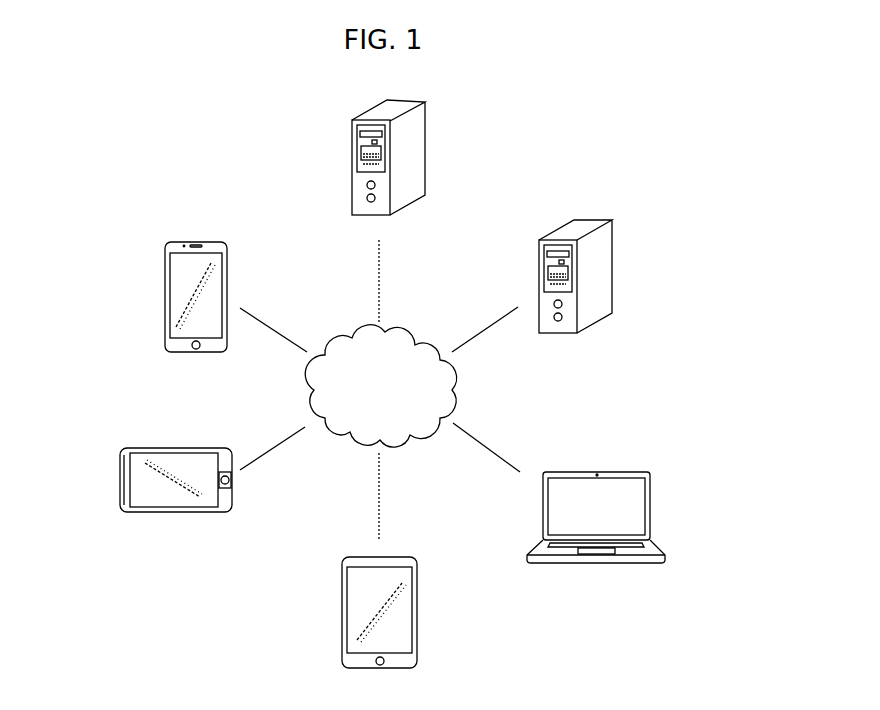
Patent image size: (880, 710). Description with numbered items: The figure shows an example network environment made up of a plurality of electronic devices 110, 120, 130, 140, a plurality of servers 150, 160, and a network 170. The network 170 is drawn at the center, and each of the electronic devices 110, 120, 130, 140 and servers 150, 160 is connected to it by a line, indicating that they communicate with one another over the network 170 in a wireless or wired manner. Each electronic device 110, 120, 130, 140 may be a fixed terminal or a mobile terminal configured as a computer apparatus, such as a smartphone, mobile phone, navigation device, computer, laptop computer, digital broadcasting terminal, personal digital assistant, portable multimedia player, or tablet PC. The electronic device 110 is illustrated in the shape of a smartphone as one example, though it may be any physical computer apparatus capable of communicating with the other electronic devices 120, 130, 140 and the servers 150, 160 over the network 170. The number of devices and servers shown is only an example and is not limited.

The electronic device 110 is at (162, 297).
The electronic device 120 is at (118, 480).
The electronic device 130 is at (418, 613).
The electronic device 140 is at (652, 508).
The server 150 is at (614, 263).
The server 160 is at (428, 147).
The network 170 is at (402, 343).